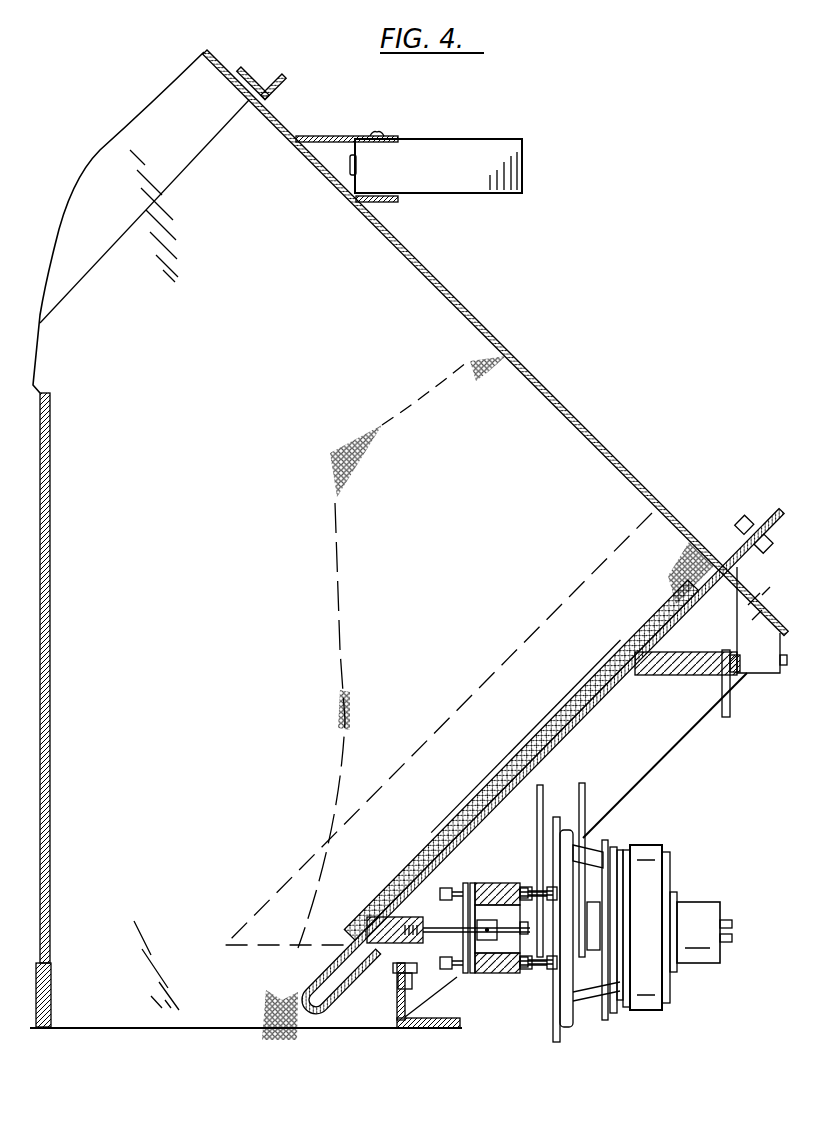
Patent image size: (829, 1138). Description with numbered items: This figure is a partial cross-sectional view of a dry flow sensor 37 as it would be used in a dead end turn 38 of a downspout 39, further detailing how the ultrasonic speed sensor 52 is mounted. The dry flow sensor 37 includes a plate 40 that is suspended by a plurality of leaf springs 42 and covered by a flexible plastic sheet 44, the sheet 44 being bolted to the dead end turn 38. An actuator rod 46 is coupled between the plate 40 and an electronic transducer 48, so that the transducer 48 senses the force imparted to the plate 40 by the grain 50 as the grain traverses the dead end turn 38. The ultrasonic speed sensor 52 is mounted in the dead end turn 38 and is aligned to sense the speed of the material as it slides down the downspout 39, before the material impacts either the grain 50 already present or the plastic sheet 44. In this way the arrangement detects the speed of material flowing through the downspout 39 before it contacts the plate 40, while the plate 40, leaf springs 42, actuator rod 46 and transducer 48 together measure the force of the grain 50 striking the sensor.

The dry flow sensor 37 is at (690, 763).
The dead end turn 38 is at (572, 418).
The downspout 39 is at (219, 62).
The plate 40 is at (588, 722).
The leaf springs 42 is at (732, 707).
The flexible plastic sheet 44 is at (303, 1018).
The actuator rod 46 is at (441, 936).
The electronic transducer 48 is at (681, 862).
The grain 50 is at (453, 604).
The ultrasonic speed sensor 52 is at (451, 141).